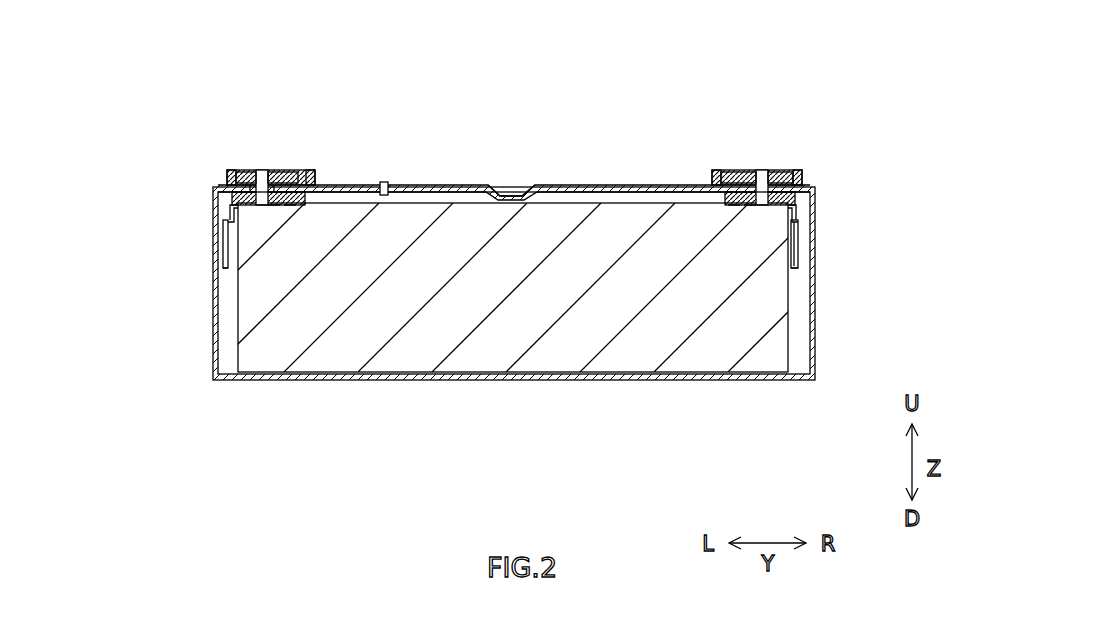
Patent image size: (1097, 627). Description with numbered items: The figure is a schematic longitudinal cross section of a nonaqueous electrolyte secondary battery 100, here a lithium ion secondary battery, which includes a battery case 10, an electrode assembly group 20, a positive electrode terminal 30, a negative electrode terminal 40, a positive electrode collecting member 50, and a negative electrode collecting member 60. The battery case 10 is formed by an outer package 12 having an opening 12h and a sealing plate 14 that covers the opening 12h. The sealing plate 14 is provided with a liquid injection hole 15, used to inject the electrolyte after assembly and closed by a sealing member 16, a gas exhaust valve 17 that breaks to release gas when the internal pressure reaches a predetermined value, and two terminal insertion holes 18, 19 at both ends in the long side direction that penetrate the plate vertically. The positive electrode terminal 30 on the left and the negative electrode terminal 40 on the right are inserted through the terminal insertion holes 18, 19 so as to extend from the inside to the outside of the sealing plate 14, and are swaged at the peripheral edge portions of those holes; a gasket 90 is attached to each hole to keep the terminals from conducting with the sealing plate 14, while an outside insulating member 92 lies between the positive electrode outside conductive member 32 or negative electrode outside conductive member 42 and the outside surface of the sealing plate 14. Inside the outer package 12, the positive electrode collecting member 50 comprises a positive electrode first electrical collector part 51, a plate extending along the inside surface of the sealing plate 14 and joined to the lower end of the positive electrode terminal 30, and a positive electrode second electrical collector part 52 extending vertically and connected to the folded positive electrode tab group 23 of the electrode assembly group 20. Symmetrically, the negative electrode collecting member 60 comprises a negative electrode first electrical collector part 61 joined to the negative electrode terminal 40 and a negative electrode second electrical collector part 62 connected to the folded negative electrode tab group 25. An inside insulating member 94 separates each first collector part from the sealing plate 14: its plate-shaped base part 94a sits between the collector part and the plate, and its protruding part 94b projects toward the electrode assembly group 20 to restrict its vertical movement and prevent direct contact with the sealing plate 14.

The nonaqueous electrolyte secondary battery 100 is at (804, 89).
The battery case 10 is at (845, 183).
The outer package 12 is at (819, 353).
The opening 12h is at (218, 187).
The sealing plate 14 is at (573, 184).
The liquid injection hole 15 is at (393, 122).
The sealing member 16 is at (386, 182).
The gas exhaust valve 17 is at (514, 186).
The terminal insertion hole 18 is at (258, 172).
The terminal insertion hole 19 is at (763, 183).
The electrode assembly group 20 is at (495, 355).
The positive electrode tab group 23 is at (235, 270).
The negative electrode tab group 25 is at (796, 270).
The positive electrode terminal 30 is at (267, 168).
The positive electrode outside conductive member 32 is at (302, 172).
The negative electrode terminal 40 is at (768, 167).
The negative electrode outside conductive member 42 is at (723, 172).
The positive electrode collecting member 50 is at (166, 232).
The positive electrode first electrical collector part 51 is at (228, 206).
The positive electrode second electrical collector part 52 is at (223, 241).
The negative electrode collecting member 60 is at (859, 232).
The negative electrode first electrical collector part 61 is at (798, 207).
The negative electrode second electrical collector part 62 is at (800, 241).
The gasket 90 is at (240, 174).
The outside insulating member 92 is at (228, 172).
The inside insulating member 94 is at (512, 330).
The base part 94a is at (290, 205).
The protruding part 94b is at (275, 205).